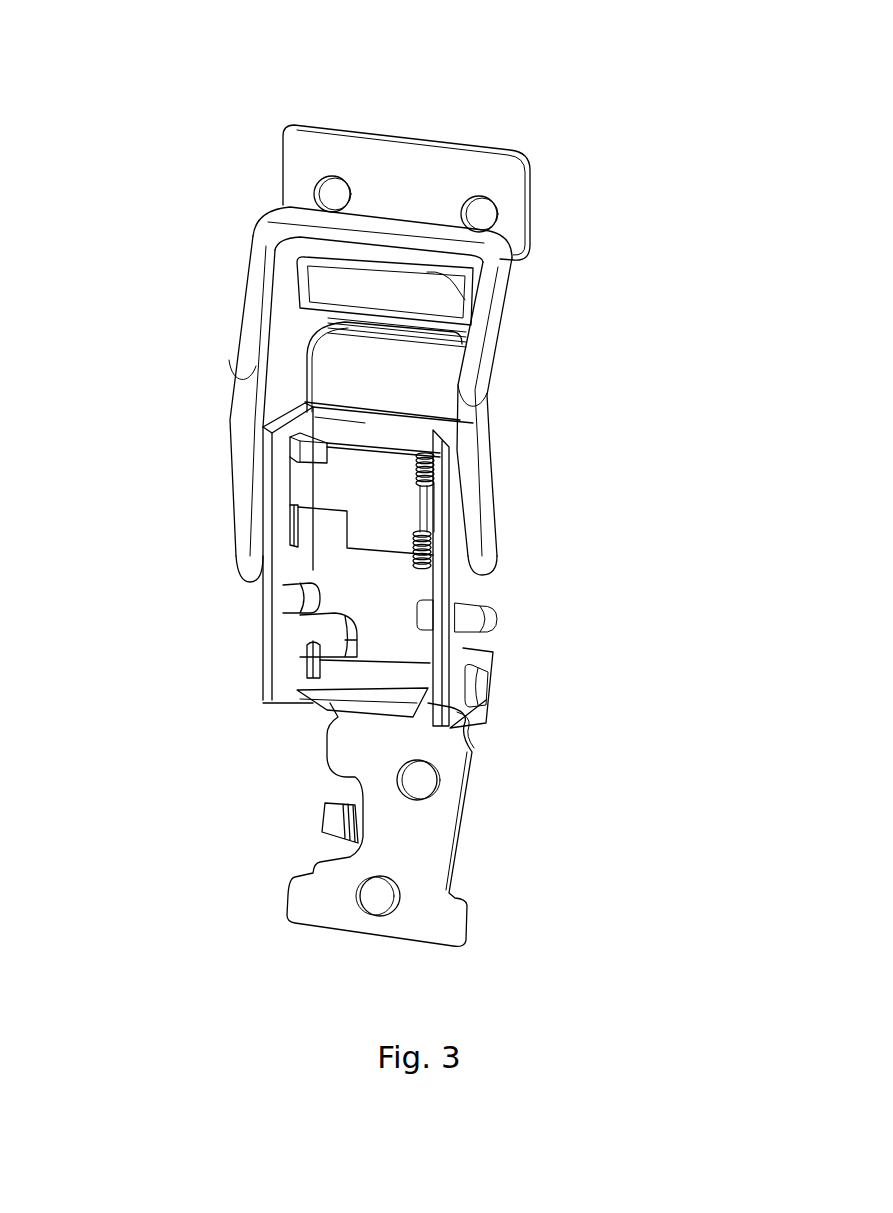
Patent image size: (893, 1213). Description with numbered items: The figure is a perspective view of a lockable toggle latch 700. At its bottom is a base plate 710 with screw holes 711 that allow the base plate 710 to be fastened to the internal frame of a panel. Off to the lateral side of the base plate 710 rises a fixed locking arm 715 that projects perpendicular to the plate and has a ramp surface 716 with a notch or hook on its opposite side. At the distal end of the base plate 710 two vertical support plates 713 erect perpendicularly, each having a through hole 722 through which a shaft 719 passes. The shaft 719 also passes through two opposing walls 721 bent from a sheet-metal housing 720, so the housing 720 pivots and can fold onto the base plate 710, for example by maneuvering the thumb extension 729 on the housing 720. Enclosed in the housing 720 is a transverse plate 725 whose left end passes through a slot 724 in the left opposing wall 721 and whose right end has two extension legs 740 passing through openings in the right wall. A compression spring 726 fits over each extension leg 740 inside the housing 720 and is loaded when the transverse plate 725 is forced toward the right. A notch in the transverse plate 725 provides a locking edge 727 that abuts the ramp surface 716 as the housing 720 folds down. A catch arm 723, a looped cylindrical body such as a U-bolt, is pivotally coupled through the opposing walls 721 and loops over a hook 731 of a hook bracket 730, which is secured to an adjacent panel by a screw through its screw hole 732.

The toggle latch 700 is at (147, 138).
The base plate 710 is at (392, 840).
The screw holes 711 is at (353, 895).
The vertical support plates 713 is at (305, 643).
The locking arm 715 is at (350, 837).
The ramp surface 716 is at (337, 820).
The shaft 719 is at (340, 667).
The housing 720 is at (412, 435).
The opposing walls 721 is at (310, 420).
The through hole 722 is at (310, 662).
The catch arm 723 is at (502, 290).
The slot 724 is at (300, 533).
The transverse plate 725 is at (353, 487).
The compression spring 726 is at (440, 547).
The locking edge 727 is at (350, 523).
The thumb extension 729 is at (307, 360).
The hook bracket 730 is at (477, 160).
The hook 731 is at (452, 312).
The screw hole 732 is at (332, 193).
The extension legs 740 is at (433, 547).